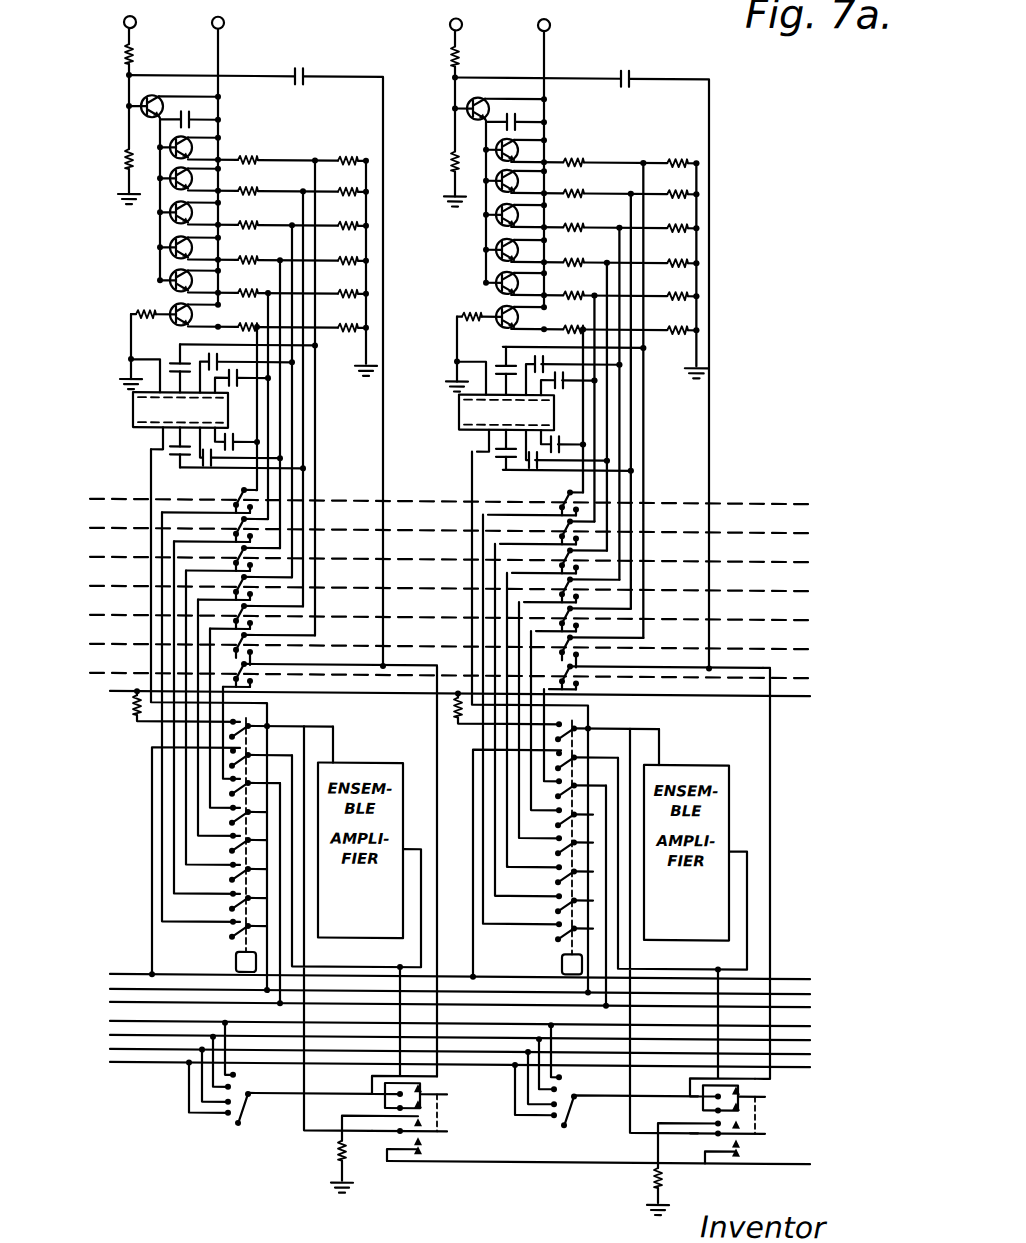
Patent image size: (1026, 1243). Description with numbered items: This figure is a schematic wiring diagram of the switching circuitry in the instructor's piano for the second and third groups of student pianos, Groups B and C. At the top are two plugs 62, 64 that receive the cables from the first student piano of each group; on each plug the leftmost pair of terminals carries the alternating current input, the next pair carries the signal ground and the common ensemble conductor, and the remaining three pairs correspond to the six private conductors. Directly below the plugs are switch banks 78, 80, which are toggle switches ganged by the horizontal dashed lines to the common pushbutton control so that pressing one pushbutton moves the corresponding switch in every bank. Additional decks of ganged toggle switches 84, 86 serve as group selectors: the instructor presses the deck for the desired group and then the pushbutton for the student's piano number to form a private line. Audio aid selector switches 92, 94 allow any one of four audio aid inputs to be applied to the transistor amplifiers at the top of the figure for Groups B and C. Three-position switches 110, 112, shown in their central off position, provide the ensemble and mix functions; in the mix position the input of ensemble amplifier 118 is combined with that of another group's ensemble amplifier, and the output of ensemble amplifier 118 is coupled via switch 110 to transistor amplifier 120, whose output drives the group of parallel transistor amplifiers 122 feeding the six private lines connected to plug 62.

The transistor amplifier 120 is at (141, 101).
The parallel transistor amplifiers 122 is at (168, 232).
The plug 62 is at (133, 410).
The plug 64 is at (459, 410).
The switch bank 78 is at (232, 491).
The switch bank 80 is at (558, 491).
The deck of ganged toggle switches 84 is at (220, 938).
The deck of ganged toggle switches 86 is at (548, 938).
The ensemble amplifier 118 is at (385, 762).
The audio aid selector switch 92 is at (215, 1127).
The audio aid selector switch 94 is at (550, 1126).
The three-position switch 110 is at (380, 1153).
The three-position switch 112 is at (722, 1162).